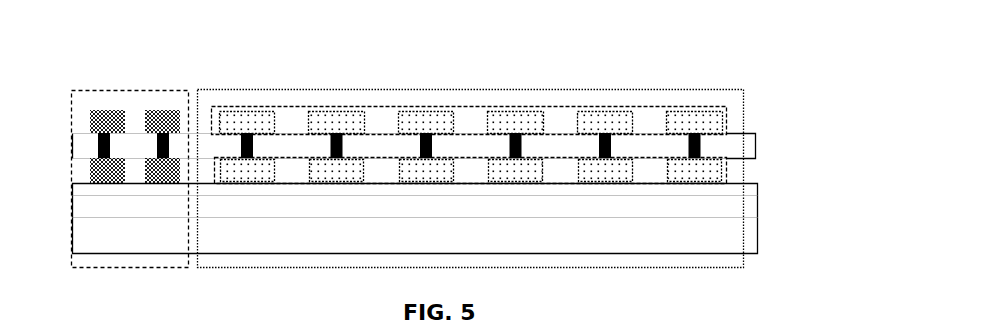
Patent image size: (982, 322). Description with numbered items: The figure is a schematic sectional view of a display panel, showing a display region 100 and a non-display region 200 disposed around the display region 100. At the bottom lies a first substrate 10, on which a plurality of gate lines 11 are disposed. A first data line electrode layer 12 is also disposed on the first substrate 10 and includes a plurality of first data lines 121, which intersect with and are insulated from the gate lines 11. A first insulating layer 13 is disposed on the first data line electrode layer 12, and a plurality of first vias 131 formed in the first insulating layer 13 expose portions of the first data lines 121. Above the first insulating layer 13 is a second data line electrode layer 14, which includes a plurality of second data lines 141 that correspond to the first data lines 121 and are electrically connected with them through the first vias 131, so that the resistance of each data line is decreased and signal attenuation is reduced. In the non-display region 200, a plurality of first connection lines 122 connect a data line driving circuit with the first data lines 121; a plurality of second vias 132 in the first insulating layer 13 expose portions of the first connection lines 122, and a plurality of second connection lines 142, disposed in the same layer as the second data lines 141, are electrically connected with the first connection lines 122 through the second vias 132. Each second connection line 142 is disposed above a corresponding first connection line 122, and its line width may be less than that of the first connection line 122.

The display region 100 is at (365, 89).
The non-display region 200 is at (188, 90).
The first substrate 10 is at (747, 233).
The gate lines 11 is at (745, 203).
The first data line electrode layer 12 is at (727, 172).
The first data lines 121 is at (445, 163).
The first connection lines 122 is at (91, 159).
The first insulating layer 13 is at (743, 144).
The first vias 131 is at (700, 145).
The second vias 132 is at (110, 141).
The second data line electrode layer 14 is at (727, 117).
The second data lines 141 is at (435, 116).
The second connection lines 142 is at (97, 113).